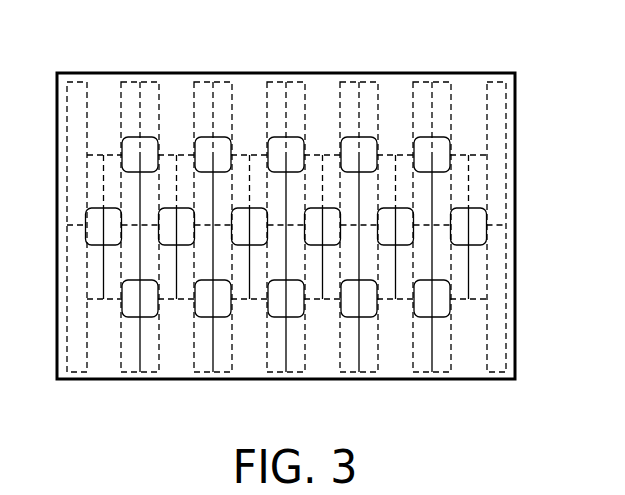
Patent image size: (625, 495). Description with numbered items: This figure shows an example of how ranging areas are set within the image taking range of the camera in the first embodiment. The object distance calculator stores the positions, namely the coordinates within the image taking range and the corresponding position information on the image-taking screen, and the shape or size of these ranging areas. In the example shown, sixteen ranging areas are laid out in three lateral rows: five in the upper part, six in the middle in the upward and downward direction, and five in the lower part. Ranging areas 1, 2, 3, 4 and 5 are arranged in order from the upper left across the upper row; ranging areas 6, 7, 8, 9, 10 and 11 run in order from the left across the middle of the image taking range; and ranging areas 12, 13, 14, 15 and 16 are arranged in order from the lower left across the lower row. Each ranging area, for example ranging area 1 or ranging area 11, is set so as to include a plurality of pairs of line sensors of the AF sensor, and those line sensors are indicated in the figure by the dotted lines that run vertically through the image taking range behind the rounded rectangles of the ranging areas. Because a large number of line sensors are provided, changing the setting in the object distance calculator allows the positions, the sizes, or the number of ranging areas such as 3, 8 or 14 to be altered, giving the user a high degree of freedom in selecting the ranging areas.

The ranging area 1 is at (132, 137).
The ranging area 2 is at (203, 137).
The ranging area 3 is at (277, 137).
The ranging area 4 is at (363, 137).
The ranging area 5 is at (438, 137).
The ranging area 6 is at (86, 232).
The ranging area 7 is at (159, 240).
The ranging area 8 is at (234, 247).
The ranging area 9 is at (323, 246).
The ranging area 10 is at (403, 245).
The ranging area 11 is at (487, 222).
The ranging area 12 is at (147, 318).
The ranging area 13 is at (218, 318).
The ranging area 14 is at (297, 318).
The ranging area 15 is at (370, 318).
The ranging area 16 is at (443, 318).